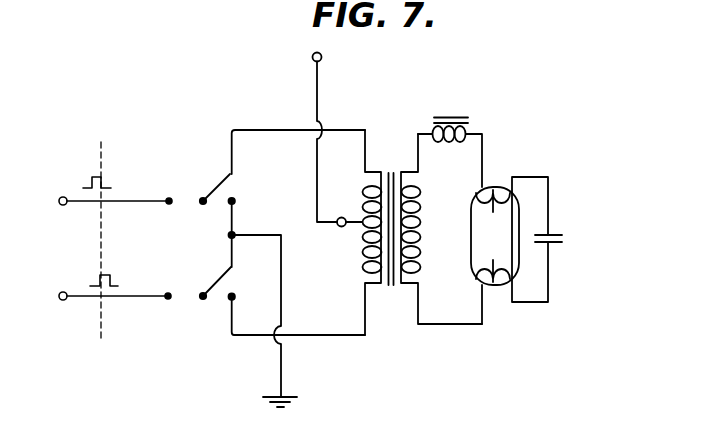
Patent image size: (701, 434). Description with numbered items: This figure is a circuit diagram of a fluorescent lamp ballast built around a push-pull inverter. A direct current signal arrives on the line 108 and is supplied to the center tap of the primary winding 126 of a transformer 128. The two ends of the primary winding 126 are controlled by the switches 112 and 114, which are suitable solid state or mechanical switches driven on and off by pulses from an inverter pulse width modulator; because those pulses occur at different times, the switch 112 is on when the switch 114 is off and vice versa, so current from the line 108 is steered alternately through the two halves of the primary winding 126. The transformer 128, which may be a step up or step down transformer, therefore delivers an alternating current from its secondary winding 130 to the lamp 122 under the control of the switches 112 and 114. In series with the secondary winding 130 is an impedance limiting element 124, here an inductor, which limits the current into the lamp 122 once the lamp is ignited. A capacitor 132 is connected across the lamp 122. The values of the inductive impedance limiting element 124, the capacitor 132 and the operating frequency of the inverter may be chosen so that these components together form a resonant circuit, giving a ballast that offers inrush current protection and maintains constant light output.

The line 108 is at (318, 93).
The switch 112 is at (222, 184).
The switch 114 is at (220, 278).
The lamp 122 is at (483, 227).
The impedance limiting element 124 is at (453, 120).
The primary winding 126 is at (365, 252).
The transformer 128 is at (391, 288).
The secondary winding 130 is at (415, 268).
The capacitor 132 is at (555, 237).